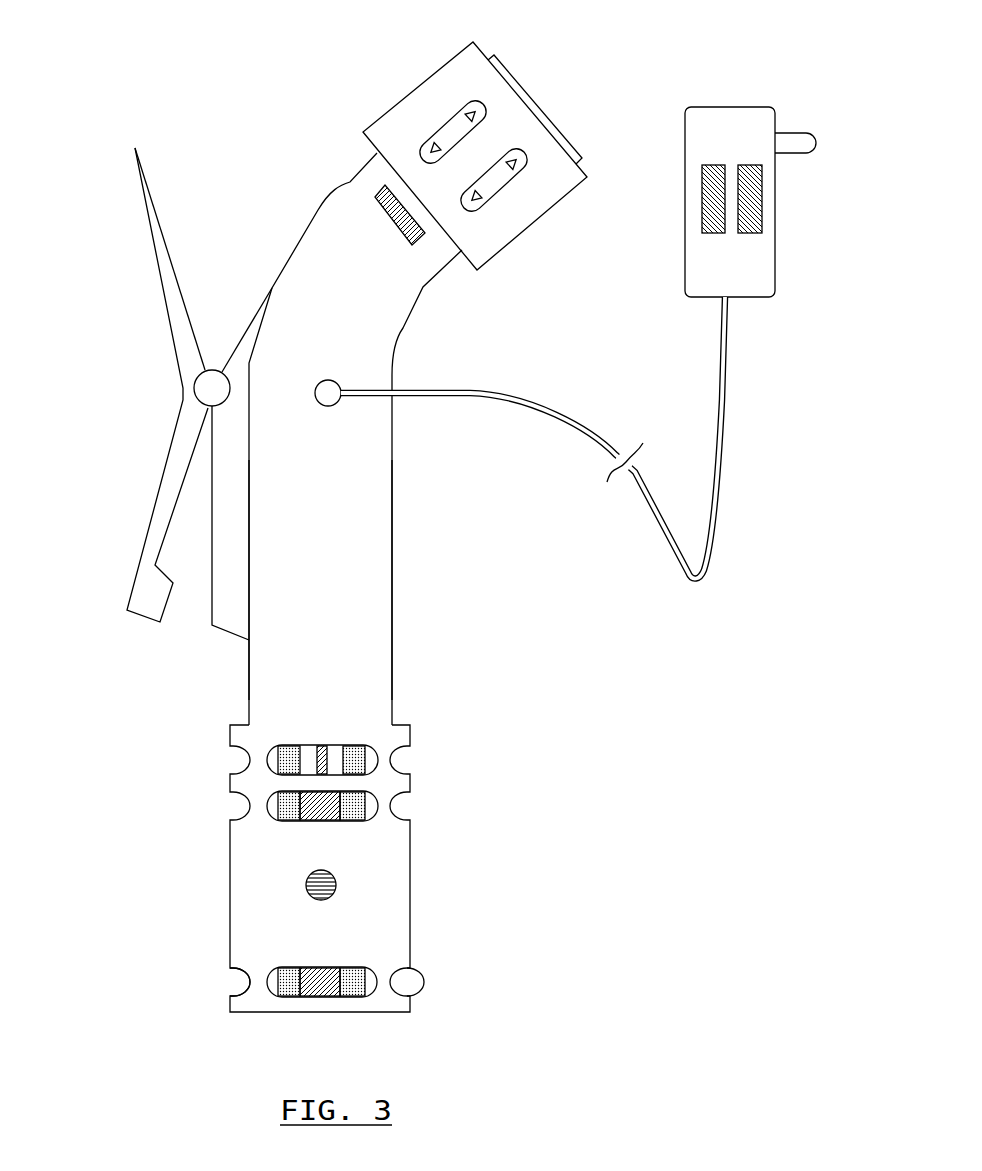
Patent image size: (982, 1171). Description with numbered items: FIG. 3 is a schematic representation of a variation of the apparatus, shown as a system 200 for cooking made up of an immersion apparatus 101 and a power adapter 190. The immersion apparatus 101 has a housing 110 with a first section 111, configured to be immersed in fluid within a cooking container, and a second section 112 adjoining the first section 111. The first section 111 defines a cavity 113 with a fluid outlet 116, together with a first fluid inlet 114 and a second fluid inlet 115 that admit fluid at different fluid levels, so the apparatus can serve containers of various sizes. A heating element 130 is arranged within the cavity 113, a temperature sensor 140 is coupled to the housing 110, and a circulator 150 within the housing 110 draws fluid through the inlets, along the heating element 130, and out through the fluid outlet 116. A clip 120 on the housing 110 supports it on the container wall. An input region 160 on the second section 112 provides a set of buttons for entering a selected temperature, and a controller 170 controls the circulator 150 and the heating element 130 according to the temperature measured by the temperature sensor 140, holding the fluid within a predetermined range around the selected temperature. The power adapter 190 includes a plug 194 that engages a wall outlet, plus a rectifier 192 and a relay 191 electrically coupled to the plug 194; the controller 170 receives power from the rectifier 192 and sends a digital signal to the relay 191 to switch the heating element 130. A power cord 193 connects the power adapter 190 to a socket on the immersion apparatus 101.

The system for cooking 200 is at (158, 60).
The immersion apparatus 101 is at (317, 260).
The housing 110 is at (372, 462).
The second section 112 is at (380, 518).
The first section 111 is at (400, 880).
The cavity 113 is at (388, 982).
The first fluid inlet 114 is at (405, 806).
The second fluid inlet 115 is at (405, 758).
The fluid outlet 116 is at (293, 997).
The handle lever 120 is at (180, 455).
The heating element 130 is at (273, 978).
The temperature sensor 140 is at (307, 884).
The circulator 150 is at (313, 818).
The input region 160 is at (510, 194).
The controller 170 is at (377, 193).
The power adapter 190 is at (697, 123).
The relay 191 is at (760, 222).
The rectifier 192 is at (715, 227).
The cable 193 is at (723, 388).
The plug 194 is at (795, 147).